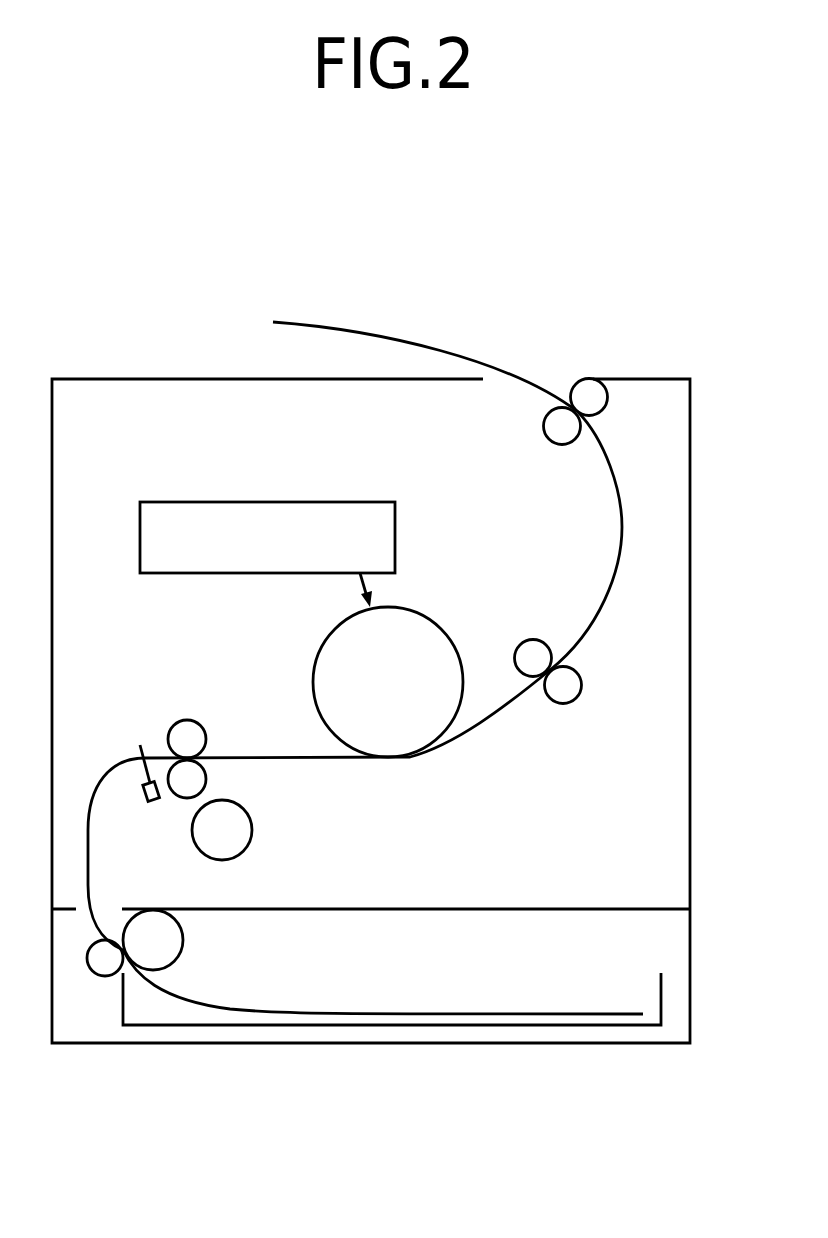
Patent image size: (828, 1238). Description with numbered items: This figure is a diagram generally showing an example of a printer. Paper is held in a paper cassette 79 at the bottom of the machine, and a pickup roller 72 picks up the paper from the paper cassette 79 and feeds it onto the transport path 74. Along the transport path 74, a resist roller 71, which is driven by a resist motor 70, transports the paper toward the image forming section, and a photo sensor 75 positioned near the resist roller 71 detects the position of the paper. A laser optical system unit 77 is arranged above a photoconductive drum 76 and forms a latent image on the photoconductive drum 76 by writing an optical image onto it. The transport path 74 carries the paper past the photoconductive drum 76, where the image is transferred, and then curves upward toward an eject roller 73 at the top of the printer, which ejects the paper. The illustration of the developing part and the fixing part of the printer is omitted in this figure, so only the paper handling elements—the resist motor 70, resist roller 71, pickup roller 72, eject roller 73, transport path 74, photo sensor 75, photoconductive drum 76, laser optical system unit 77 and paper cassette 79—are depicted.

The resist motor 70 is at (252, 836).
The resist roller 71 is at (206, 728).
The pickup roller 72 is at (183, 942).
The eject roller 73 is at (543, 433).
The transport path 74 is at (470, 342).
The photo sensor 75 is at (140, 800).
The photoconductive drum 76 is at (327, 642).
The laser optical system unit 77 is at (275, 500).
The paper cassette 79 is at (580, 700).